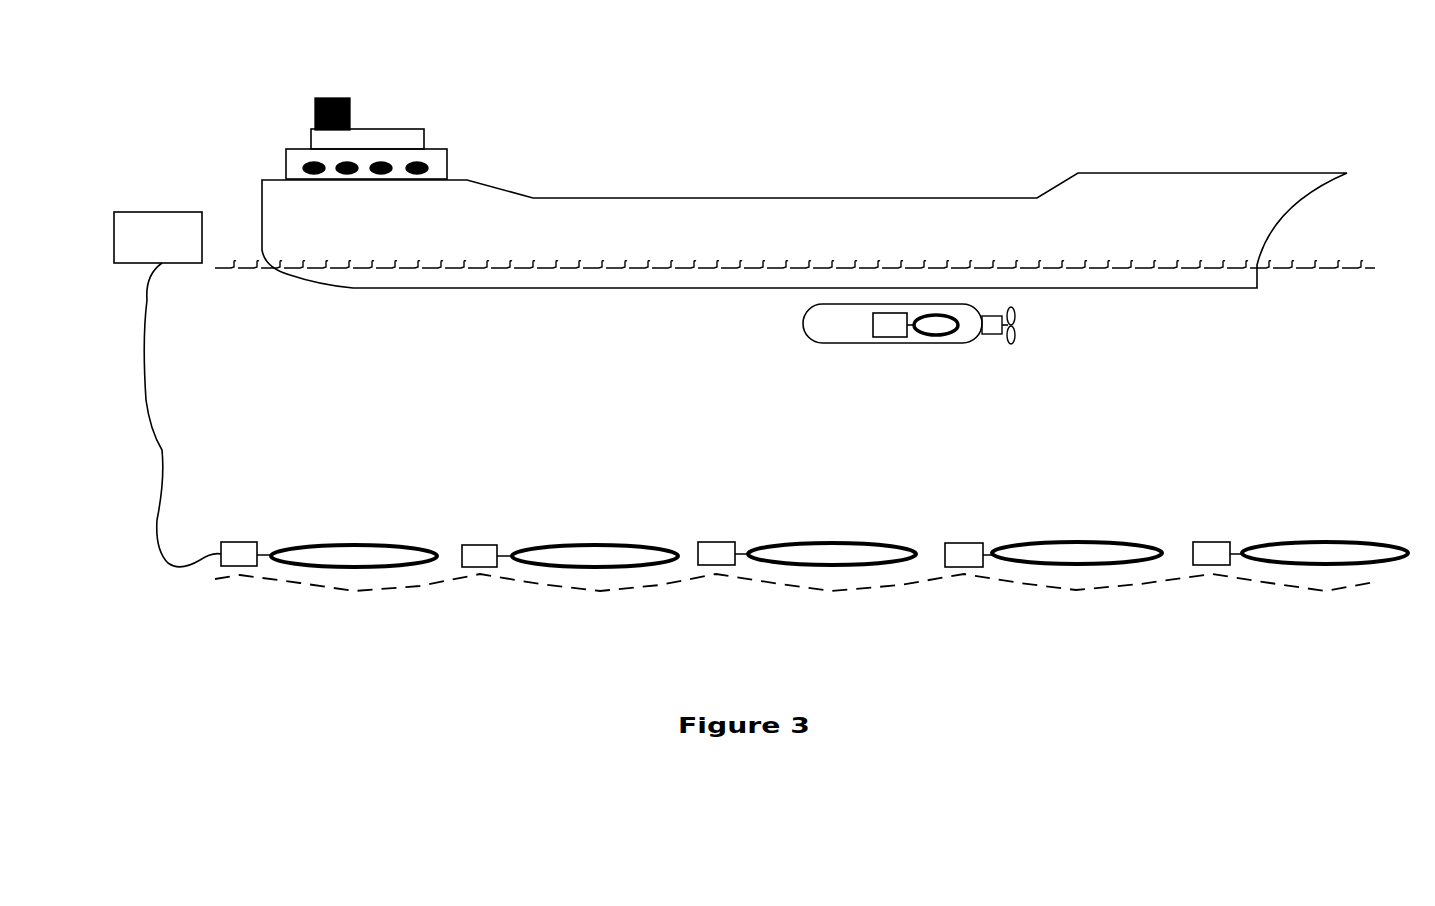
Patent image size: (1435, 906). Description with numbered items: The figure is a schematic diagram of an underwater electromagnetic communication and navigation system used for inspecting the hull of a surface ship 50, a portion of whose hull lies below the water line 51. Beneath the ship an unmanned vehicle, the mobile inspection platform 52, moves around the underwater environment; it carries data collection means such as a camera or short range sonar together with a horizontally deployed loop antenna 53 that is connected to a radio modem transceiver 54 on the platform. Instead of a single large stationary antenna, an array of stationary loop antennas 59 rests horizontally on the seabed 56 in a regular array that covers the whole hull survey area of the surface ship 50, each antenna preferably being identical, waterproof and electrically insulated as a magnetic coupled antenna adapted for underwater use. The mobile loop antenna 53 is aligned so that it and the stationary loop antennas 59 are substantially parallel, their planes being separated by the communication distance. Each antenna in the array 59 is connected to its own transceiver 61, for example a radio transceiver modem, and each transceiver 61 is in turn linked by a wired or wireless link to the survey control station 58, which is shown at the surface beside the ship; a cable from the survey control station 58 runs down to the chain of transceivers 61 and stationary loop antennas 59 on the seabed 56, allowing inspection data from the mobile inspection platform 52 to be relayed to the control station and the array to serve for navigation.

The surface ship 50 is at (801, 213).
The water line 51 is at (251, 282).
The mobile inspection platform 52 is at (881, 370).
The loop antenna 53 is at (959, 347).
The radio modem transceiver 54 is at (876, 345).
The seabed 56 is at (1057, 597).
The survey control station 58 is at (167, 200).
The stationary loop antennas 59 is at (420, 463).
The transceiver 61 is at (257, 577).